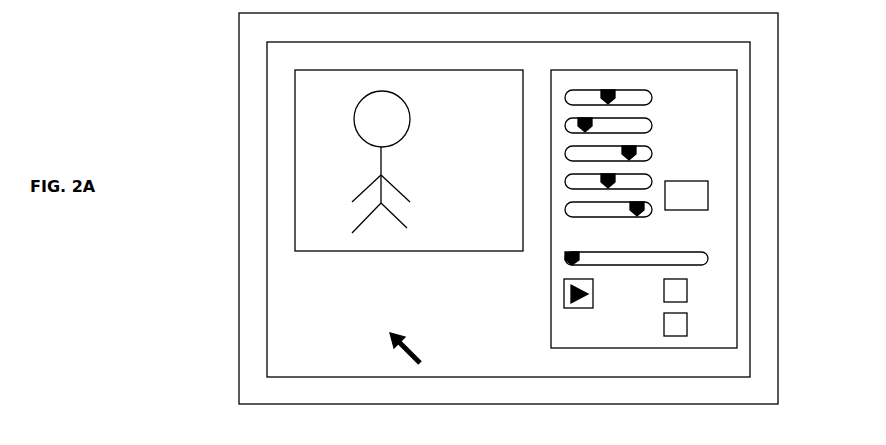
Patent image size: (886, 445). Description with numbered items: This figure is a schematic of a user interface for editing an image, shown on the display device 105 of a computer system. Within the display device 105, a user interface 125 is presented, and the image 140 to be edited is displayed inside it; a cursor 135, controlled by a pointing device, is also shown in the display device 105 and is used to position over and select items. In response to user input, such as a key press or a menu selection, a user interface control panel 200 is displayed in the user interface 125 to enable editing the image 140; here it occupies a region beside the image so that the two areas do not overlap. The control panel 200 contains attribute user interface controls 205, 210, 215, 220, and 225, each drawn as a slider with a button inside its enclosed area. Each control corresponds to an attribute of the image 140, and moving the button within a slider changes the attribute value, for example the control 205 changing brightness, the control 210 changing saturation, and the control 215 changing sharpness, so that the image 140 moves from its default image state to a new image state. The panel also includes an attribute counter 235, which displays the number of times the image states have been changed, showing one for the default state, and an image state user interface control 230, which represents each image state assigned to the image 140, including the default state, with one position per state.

The display device 105 is at (239, 43).
The user interface 125 is at (267, 100).
The image 140 is at (295, 157).
The cursor 135 is at (392, 344).
The user interface control panel 200 is at (737, 330).
The attribute user interface control 205 is at (652, 97).
The attribute user interface control 210 is at (652, 125).
The attribute user interface control 215 is at (652, 152).
The attribute user interface control 220 is at (645, 174).
The attribute user interface control 225 is at (640, 216).
The attribute counter 235 is at (708, 193).
The image state user interface control 230 is at (706, 264).